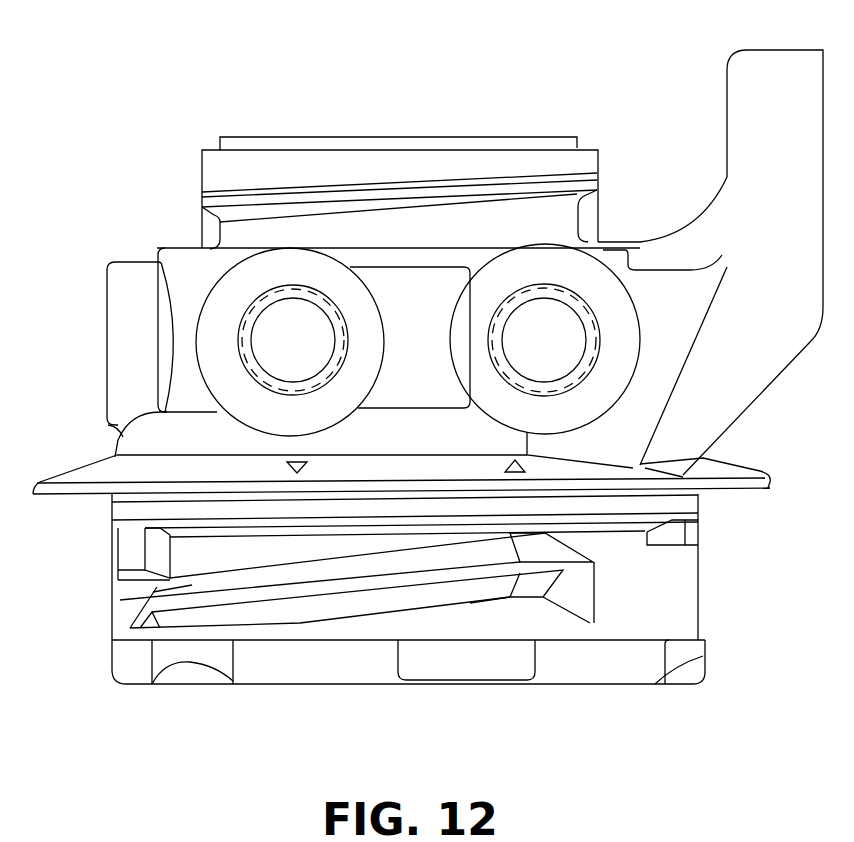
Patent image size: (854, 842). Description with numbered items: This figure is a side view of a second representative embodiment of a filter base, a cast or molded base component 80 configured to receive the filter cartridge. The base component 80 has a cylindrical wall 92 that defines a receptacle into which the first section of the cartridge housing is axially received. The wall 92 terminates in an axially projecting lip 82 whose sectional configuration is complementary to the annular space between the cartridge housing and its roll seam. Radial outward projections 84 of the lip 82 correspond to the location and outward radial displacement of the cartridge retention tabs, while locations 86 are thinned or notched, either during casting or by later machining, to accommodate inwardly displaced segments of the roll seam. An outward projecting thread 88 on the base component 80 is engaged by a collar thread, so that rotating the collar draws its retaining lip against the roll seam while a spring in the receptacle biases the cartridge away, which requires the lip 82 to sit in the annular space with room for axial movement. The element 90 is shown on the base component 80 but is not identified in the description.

The connector assembly 80 is at (170, 168).
The base 82 is at (572, 667).
The feet 84 is at (180, 676).
The central foot 86 is at (460, 668).
The wedge lever 88 is at (157, 592).
The arm 90 is at (743, 88).
The lower housing 92 is at (680, 592).